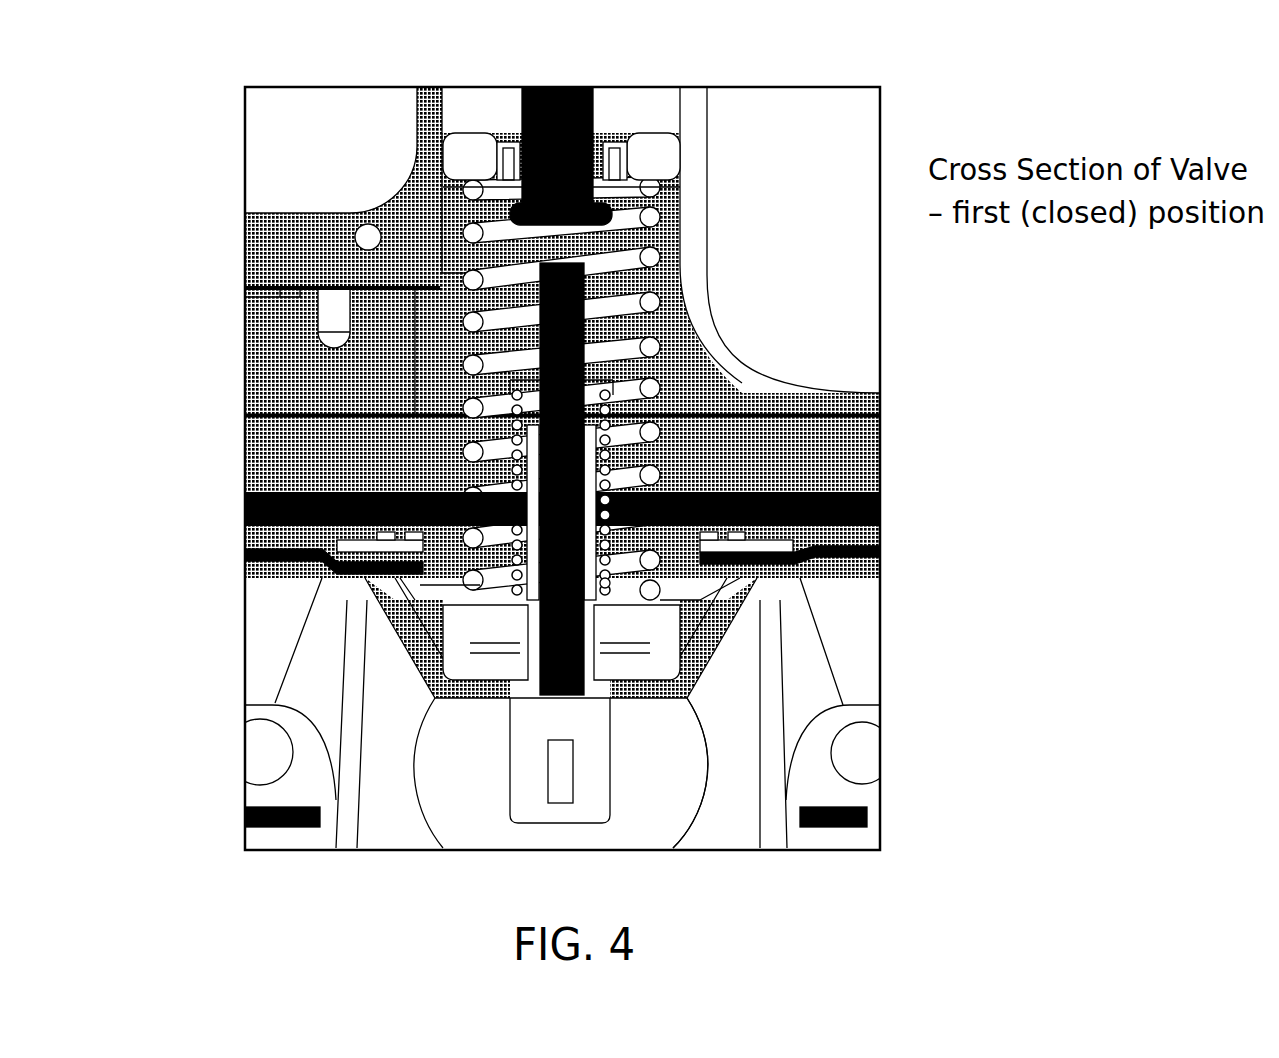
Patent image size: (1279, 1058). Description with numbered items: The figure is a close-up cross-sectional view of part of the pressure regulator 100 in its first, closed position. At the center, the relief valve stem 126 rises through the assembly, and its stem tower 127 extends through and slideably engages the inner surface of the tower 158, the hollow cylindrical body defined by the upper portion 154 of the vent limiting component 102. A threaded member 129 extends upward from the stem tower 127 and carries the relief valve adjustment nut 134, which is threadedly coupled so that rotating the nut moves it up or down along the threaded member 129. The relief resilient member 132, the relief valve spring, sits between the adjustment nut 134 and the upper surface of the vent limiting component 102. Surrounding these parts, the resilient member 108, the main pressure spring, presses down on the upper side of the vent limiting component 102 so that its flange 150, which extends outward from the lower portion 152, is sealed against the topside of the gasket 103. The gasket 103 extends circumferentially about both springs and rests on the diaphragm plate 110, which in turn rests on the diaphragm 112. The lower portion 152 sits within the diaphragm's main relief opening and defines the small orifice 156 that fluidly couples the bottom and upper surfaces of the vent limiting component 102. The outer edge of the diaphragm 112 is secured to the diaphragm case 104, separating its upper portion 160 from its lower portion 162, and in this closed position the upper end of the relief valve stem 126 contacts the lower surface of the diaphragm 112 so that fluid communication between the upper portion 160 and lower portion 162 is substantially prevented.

The pressure regulator 100 is at (168, 98).
The vent limiting component 102 is at (376, 525).
The gasket 103 is at (381, 550).
The diaphragm case 104 is at (858, 717).
The resilient member 108 is at (470, 447).
The diaphragm plate 110 is at (856, 547).
The diaphragm 112 is at (876, 557).
The relief valve stem 126 is at (414, 644).
The stem tower 127 is at (598, 583).
The threaded member 129 is at (692, 385).
The relief resilient member 132 is at (506, 512).
The relief valve adjustment nut 134 is at (590, 372).
The flange 150 is at (736, 538).
The lower portion 152 is at (678, 583).
The upper portion 154 is at (606, 482).
The orifice 156 is at (488, 608).
The tower 158 is at (604, 530).
The upper portion of the diaphragm case 160 is at (578, 402).
The lower portion of the diaphragm case 162 is at (738, 700).